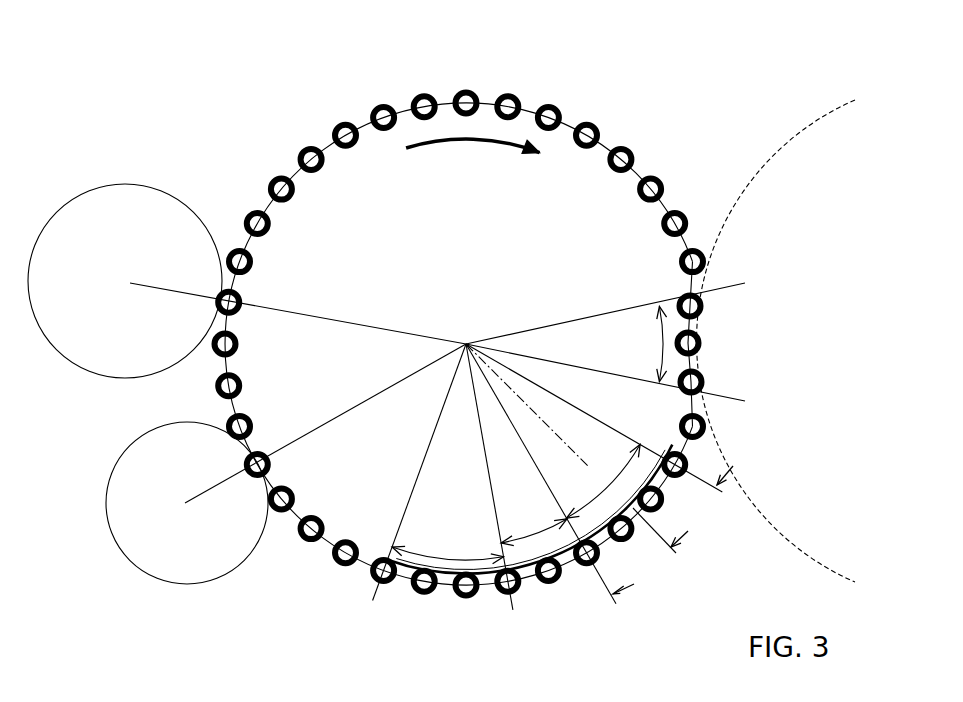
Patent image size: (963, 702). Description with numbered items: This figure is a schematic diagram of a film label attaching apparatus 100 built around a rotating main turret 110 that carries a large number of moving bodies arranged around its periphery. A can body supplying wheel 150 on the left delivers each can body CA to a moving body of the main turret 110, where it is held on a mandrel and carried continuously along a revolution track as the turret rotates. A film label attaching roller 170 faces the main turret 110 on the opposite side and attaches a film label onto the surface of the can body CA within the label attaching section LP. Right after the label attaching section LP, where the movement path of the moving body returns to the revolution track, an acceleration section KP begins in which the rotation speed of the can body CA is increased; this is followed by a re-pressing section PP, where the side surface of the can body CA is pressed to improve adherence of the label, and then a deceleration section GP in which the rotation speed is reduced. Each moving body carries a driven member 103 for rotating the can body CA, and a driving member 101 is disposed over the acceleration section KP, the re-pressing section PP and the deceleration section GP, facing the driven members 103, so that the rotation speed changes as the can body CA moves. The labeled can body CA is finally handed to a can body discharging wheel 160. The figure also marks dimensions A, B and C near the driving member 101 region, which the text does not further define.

The film label attaching apparatus 100 is at (125, 82).
The main turret 110 is at (403, 258).
The driving member 101 is at (405, 581).
The driven member 103 is at (508, 592).
The can body supplying wheel 150 is at (135, 225).
The can body discharging wheel 160 is at (172, 537).
The film label attaching roller 170 is at (803, 170).
The can body CA is at (548, 106).
The label attaching section LP is at (643, 343).
The deceleration section GP is at (447, 539).
The re-pressing section PP is at (534, 528).
The acceleration section KP is at (604, 482).
The distance A is at (730, 464).
The distance B is at (667, 530).
The distance C is at (631, 579).